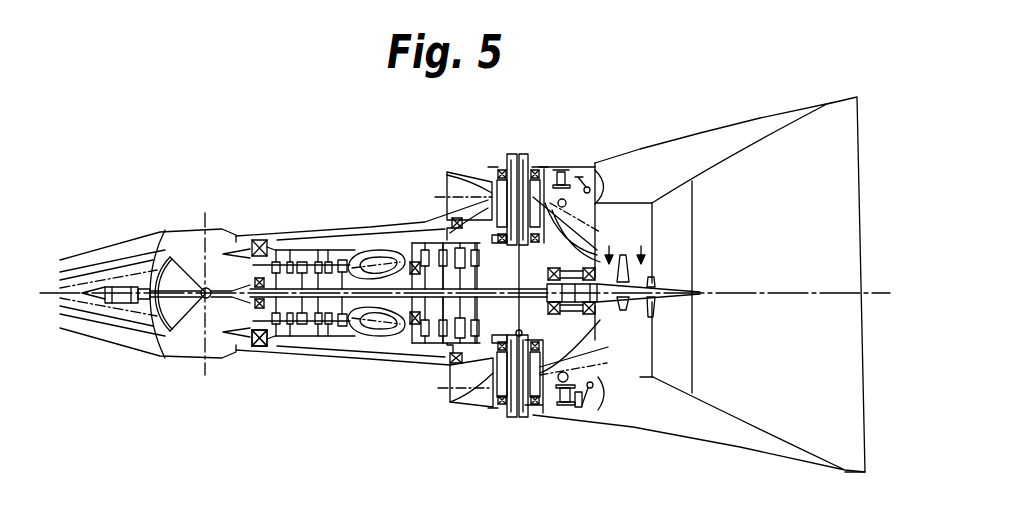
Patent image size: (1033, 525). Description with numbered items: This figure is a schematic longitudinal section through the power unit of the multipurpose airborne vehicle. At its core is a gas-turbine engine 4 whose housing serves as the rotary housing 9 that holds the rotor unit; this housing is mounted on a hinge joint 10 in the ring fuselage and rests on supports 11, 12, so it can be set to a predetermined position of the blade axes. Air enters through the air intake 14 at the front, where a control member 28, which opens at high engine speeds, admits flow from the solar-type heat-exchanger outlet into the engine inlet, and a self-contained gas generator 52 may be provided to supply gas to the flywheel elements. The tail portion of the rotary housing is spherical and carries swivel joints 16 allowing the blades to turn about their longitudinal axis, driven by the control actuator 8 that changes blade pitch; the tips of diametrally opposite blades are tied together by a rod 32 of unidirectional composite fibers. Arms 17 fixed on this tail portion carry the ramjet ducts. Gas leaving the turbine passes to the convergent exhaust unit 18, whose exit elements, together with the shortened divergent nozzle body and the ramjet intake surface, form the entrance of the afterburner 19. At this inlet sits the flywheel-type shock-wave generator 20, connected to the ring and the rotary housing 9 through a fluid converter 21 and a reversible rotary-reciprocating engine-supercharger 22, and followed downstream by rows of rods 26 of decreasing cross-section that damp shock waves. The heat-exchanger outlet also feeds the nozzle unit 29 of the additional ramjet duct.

The gas-turbine engine 4 is at (305, 330).
The control actuator 8 is at (562, 170).
The rotary housing 9 is at (357, 333).
The hinge joint 10 is at (205, 308).
The support 11 is at (263, 348).
The support 12 is at (450, 360).
The air intake 14 is at (167, 231).
The swivel joint 16 is at (533, 167).
The arm 17 is at (493, 192).
The exhaust unit 18 is at (581, 186).
The afterburner 19 is at (633, 212).
The shock-wave generator 20 is at (650, 272).
The fluid converter 21 is at (600, 320).
The reversible engine-supercharger 22 is at (575, 305).
The rod 26 is at (658, 272).
The control member 28 is at (197, 294).
The nozzle unit 29 is at (542, 368).
The rod 32 is at (517, 332).
The self-contained gas generator 52 is at (121, 286).